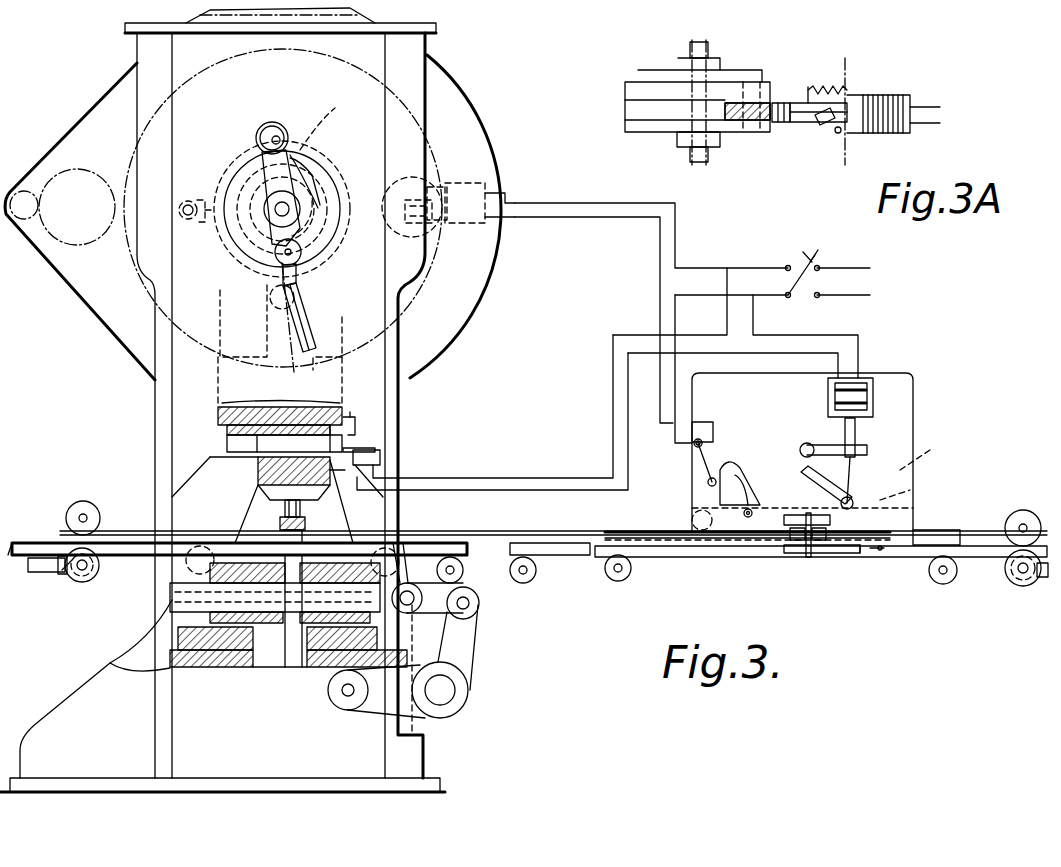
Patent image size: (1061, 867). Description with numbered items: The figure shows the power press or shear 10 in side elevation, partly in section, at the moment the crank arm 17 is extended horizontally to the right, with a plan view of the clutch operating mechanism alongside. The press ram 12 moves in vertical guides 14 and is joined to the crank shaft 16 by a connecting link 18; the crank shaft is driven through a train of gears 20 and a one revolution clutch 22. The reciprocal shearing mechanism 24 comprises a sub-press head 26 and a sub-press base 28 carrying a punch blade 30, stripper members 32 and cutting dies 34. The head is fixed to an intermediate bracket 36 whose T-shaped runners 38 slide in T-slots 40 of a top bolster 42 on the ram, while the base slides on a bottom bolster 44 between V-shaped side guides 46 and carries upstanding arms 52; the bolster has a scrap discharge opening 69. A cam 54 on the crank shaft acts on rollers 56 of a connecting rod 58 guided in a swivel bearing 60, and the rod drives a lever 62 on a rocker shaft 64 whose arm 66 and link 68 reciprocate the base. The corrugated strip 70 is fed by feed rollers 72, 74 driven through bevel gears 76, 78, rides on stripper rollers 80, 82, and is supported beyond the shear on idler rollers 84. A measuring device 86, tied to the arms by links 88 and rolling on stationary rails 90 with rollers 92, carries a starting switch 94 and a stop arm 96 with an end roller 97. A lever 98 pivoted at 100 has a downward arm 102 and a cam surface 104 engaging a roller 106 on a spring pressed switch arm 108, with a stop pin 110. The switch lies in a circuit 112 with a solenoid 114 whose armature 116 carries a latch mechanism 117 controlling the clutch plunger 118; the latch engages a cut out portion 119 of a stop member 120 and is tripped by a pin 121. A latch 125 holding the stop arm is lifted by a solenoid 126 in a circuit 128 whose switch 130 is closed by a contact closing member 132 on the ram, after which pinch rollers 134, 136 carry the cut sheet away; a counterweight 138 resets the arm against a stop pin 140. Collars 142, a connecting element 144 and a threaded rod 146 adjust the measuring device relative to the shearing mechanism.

In FIG. 3, the power press or shear 10 is at (140, 60).
In FIG. 3, the press ram 12 is at (216, 408).
In FIG. 3, the vertical guides 14 is at (220, 330).
In FIG. 3, the crank shaft 16 is at (258, 170).
In FIG. 3A, the crank shaft 16 is at (688, 46).
In FIG. 3, the crank arm 17 is at (325, 170).
In FIG. 3, the connecting link 18 is at (325, 255).
In FIG. 3, the train of gears 20 is at (104, 160).
In FIG. 3, the one revolution clutch 22 is at (326, 164).
In FIG. 3A, the one revolution clutch 22 is at (615, 78).
In FIG. 3, the sub-press or shearing mechanism 24 is at (360, 512).
In FIG. 3, the sub-press head 26 is at (240, 470).
In FIG. 3, the sub-press base 28 is at (215, 605).
In FIG. 3, the punch blade 30 is at (284, 506).
In FIG. 3, the stripper members 32 is at (280, 523).
In FIG. 3, the cutting dies 34 is at (283, 538).
In FIG. 3, the intermediate bracket 36 is at (210, 458).
In FIG. 3, the T-shaped runners 38 is at (286, 404).
In FIG. 3, the T-slots 40 is at (228, 442).
In FIG. 3, the top bolster 42 is at (226, 428).
In FIG. 3, the bottom bolster 44 is at (178, 640).
In FIG. 3, the side guides 46 is at (175, 608).
In FIG. 3, the upstanding arms 52 is at (270, 490).
In FIG. 3, the cam 54 is at (292, 160).
In FIG. 3, the rollers 56 is at (272, 122).
In FIG. 3, the connecting rod 58 is at (308, 312).
In FIG. 3, the swivel bearing 60 is at (238, 235).
In FIG. 3, the lever 62 is at (360, 710).
In FIG. 3, the rocker shaft 64 is at (445, 700).
In FIG. 3, the arm 66 is at (480, 660).
In FIG. 3, the link 68 is at (480, 610).
In FIG. 3, the scrap discharge opening 69 is at (300, 670).
In FIG. 3, the strip of corrugated metal 70 is at (22, 542).
In FIG. 3, the feed roller 72 is at (78, 503).
In FIG. 3, the feed roller 74 is at (75, 580).
In FIG. 3, the bevel gear 76 is at (60, 573).
In FIG. 3, the bevel gear 78 is at (100, 570).
In FIG. 3, the stripper roller 80 is at (186, 562).
In FIG. 3, the stripper roller 82 is at (398, 565).
In FIG. 3, the idler rollers 84 is at (605, 578).
In FIG. 3, the measuring device 86 is at (900, 358).
In FIG. 3, the links 88 is at (540, 540).
In FIG. 3, the stationary rails 90 is at (945, 530).
In FIG. 3, the rollers 92 is at (690, 518).
In FIG. 3, the starting switch 94 is at (700, 422).
In FIG. 3, the stop arm 96 is at (920, 470).
In FIG. 3, the roller 97 is at (900, 510).
In FIG. 3, the lever 98 is at (740, 470).
In FIG. 3, the pivot 100 is at (802, 470).
In FIG. 3, the arm 102 is at (746, 520).
In FIG. 3, the cam surface 104 is at (718, 497).
In FIG. 3, the roller 106 is at (706, 483).
In FIG. 3, the switch arm 108 is at (700, 465).
In FIG. 3, the stop pin 110 is at (740, 530).
In FIG. 3, the circuit 112 is at (658, 277).
In FIG. 3A, the circuit 112 is at (938, 107).
In FIG. 3, the solenoid 114 is at (475, 183).
In FIG. 3A, the solenoid 114 is at (908, 95).
In FIG. 3, the armature 116 is at (430, 245).
In FIG. 3A, the armature 116 is at (800, 124).
In FIG. 3A, the latch mechanism 117 is at (826, 130).
In FIG. 3, the plunger 118 is at (205, 195).
In FIG. 3A, the plunger 118 is at (775, 124).
In FIG. 3A, the cut out portion 119 is at (825, 87).
In FIG. 3, the stop member 120 is at (405, 185).
In FIG. 3A, the stop member 120 is at (790, 100).
In FIG. 3A, the pin 121 is at (843, 134).
In FIG. 3, the latch 125 is at (820, 443).
In FIG. 3, the solenoid 126 is at (875, 390).
In FIG. 3, the circuit 128 is at (610, 394).
In FIG. 3, the switch 130 is at (382, 458).
In FIG. 3, the contact closing member 132 is at (360, 418).
In FIG. 3, the pinch roller 134 is at (1030, 500).
In FIG. 3, the pinch roller 136 is at (1020, 588).
In FIG. 3, the counterweight 138 is at (870, 455).
In FIG. 3, the stop pin 140 is at (838, 545).
In FIG. 3, the collars 142 is at (790, 528).
In FIG. 3, the connecting element 144 is at (808, 545).
In FIG. 3, the threaded rod 146 is at (876, 555).